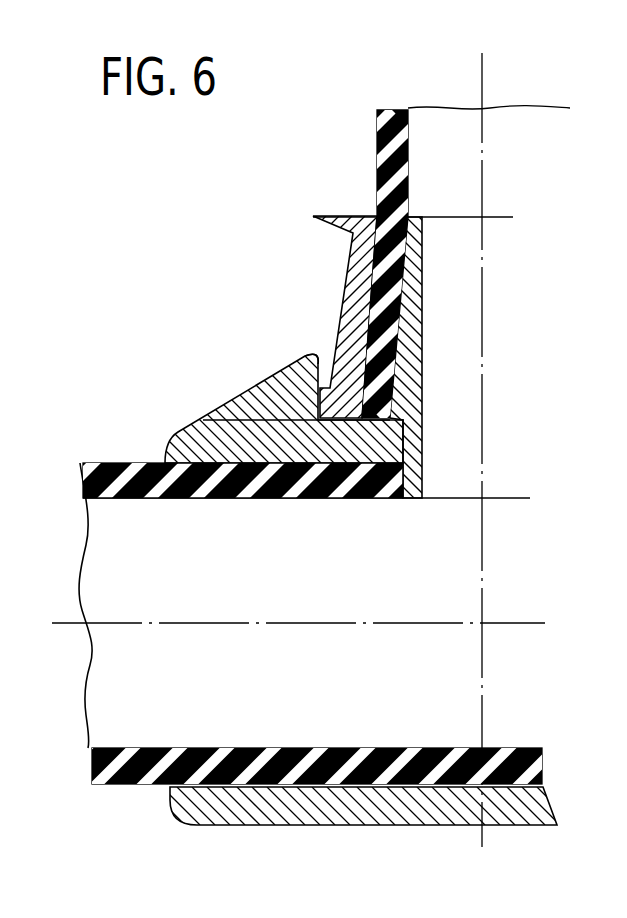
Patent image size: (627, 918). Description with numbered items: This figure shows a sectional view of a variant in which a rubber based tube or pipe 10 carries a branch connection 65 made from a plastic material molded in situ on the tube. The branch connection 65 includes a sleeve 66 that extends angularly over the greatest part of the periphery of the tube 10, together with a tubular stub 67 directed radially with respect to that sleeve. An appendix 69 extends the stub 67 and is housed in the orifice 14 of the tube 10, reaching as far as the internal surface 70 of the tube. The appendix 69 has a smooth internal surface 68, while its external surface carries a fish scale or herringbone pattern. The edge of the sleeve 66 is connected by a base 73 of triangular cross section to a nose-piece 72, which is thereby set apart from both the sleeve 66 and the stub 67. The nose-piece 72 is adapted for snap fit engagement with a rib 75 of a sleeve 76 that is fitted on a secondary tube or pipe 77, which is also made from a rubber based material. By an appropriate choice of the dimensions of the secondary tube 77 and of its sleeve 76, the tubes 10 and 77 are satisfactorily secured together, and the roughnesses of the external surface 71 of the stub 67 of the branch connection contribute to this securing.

The tube 10 is at (131, 787).
The orifice 14 is at (423, 462).
The branch connection 65 is at (249, 372).
The sleeve 66 is at (363, 803).
The tubular stub 67 is at (423, 343).
The internal surface 68 is at (423, 262).
The appendix 69 is at (423, 480).
The internal surface 70 is at (347, 500).
The external surface 71 is at (350, 268).
The nose-piece 72 is at (318, 354).
The base 73 is at (232, 392).
The rib 75 is at (313, 467).
The sleeve 76 is at (348, 298).
The secondary tube 77 is at (390, 112).